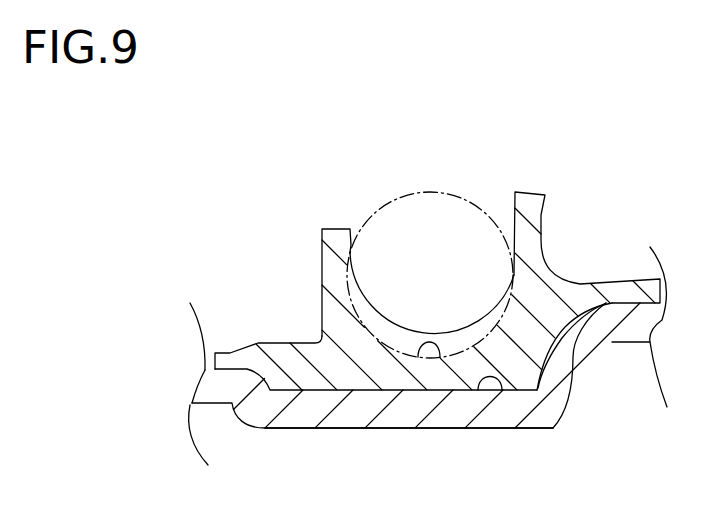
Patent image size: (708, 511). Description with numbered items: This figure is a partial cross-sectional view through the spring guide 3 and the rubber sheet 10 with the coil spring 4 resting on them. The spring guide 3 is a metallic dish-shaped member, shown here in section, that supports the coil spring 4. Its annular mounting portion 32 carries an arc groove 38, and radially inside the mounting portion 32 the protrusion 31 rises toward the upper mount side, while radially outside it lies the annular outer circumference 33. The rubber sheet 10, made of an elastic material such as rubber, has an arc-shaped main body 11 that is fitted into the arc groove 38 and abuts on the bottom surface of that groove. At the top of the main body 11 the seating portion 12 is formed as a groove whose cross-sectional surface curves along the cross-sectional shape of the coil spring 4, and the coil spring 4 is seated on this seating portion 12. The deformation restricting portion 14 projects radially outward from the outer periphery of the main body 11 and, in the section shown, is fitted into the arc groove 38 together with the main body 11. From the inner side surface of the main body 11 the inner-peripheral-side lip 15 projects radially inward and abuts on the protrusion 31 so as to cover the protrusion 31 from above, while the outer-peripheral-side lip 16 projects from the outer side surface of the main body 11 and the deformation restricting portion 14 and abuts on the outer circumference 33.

The spring guide 3 is at (553, 428).
The coil spring 4 is at (434, 191).
The rubber sheet 10 is at (336, 229).
The main body 11 is at (393, 372).
The seating portion 12 is at (440, 357).
The deformation restricting portion 14 is at (285, 363).
The inner-peripheral-side lip 15 is at (613, 290).
The outer-peripheral-side lip 16 is at (219, 352).
The protrusion 31 is at (606, 326).
The mounting portion 32 is at (353, 410).
The outer circumference 33 is at (232, 410).
The arc groove 38 is at (502, 390).